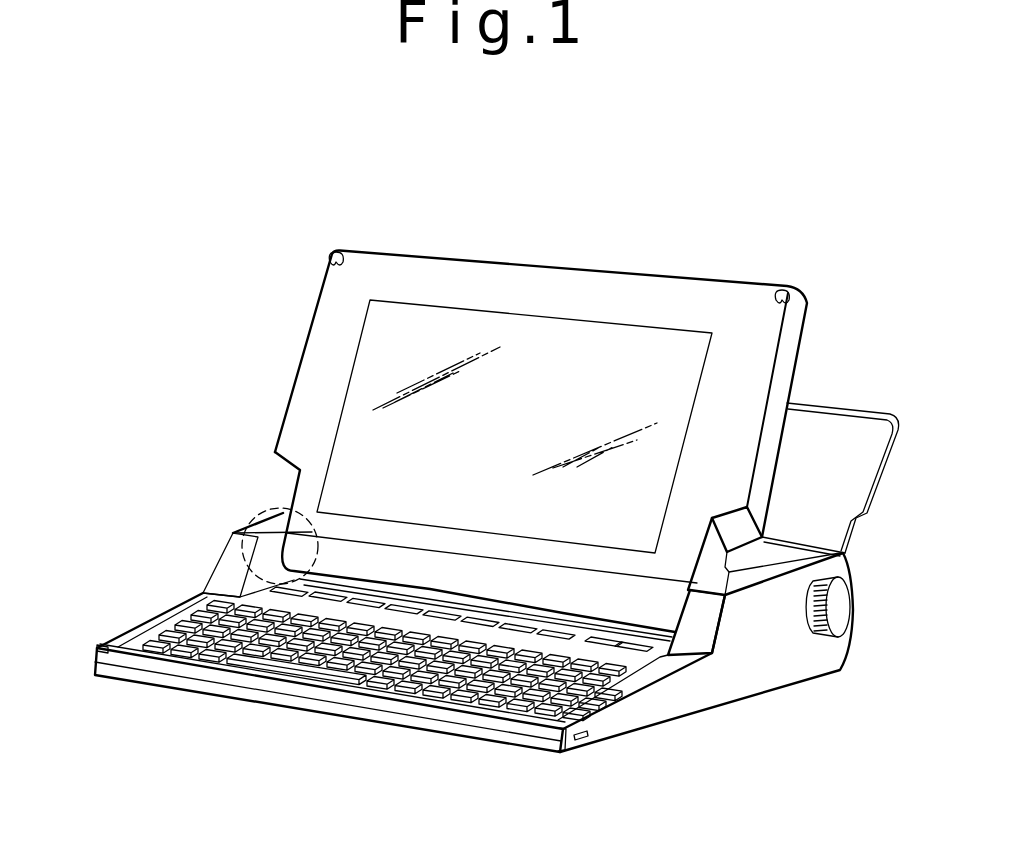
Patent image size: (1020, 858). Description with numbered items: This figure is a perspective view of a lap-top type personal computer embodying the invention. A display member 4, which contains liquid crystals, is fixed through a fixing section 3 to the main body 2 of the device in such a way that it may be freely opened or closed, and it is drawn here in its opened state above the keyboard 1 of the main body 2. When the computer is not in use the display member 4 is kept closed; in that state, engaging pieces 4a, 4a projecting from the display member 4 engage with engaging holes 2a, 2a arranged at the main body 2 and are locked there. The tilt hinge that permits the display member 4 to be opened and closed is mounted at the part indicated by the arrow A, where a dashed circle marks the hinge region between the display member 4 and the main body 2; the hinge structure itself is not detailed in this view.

The keyboard 1 is at (360, 686).
The main body 2 is at (252, 506).
The engaging hole 2a is at (97, 648).
The fixing section 3 is at (462, 570).
The display member 4 is at (512, 433).
The engaging piece 4a is at (330, 257).
The arrow A is at (247, 548).